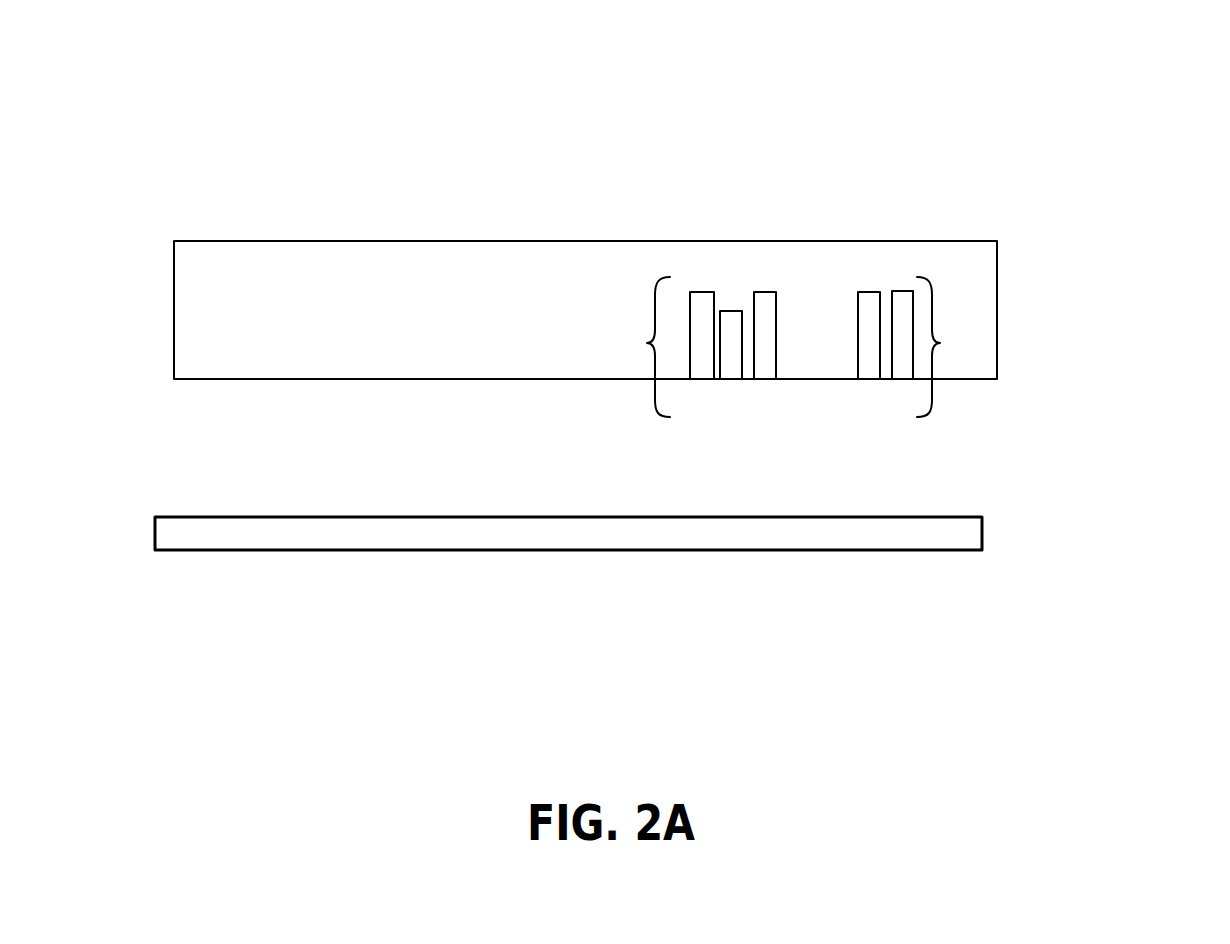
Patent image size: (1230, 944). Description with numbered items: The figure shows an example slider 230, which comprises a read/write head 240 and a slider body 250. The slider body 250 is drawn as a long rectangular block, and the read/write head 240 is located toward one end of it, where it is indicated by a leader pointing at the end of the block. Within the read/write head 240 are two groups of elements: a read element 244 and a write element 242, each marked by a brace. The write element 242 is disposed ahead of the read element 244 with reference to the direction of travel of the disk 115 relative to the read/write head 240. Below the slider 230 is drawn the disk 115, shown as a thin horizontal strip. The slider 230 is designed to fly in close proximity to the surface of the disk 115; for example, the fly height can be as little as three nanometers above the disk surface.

The slider 230 is at (158, 56).
The slider body 250 is at (271, 293).
The read/write head 240 is at (887, 382).
The read element 244 is at (676, 379).
The write element 242 is at (945, 397).
The disk 115 is at (682, 550).